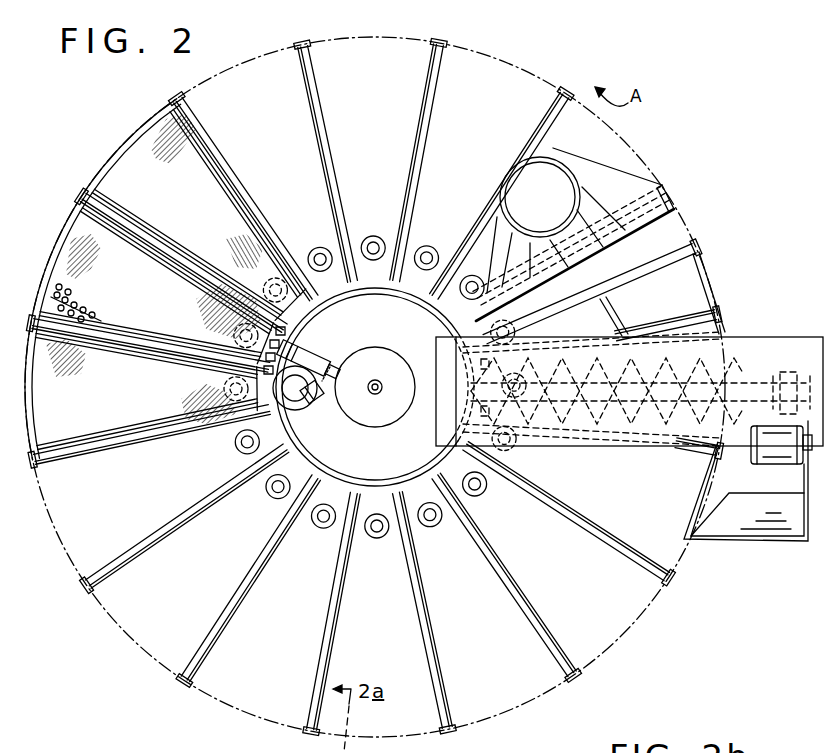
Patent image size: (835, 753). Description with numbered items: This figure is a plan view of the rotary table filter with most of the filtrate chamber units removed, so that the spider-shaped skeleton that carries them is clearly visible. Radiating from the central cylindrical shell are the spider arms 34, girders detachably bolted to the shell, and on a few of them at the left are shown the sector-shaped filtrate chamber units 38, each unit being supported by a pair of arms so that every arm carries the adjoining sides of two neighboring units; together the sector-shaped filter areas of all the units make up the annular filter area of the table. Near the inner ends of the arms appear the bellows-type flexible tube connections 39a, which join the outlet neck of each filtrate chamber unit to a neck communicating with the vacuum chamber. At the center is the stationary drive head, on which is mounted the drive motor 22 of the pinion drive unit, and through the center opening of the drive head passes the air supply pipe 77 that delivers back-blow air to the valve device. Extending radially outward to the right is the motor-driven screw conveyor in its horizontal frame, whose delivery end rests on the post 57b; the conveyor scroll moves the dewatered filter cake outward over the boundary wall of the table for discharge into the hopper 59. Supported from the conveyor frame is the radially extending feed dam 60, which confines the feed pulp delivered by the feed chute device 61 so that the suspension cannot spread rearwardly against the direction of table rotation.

The drive motor 22 is at (311, 401).
The spider arms 34 is at (88, 458).
The sector-shaped filtrate chamber units 38 is at (117, 138).
The bellows-type flexible tube connection 39a is at (503, 450).
The post 57b is at (555, 447).
The hopper 59 is at (732, 523).
The feed dam 60 is at (697, 250).
The feed chute device 61 is at (561, 183).
The air supply pipe 77 is at (374, 394).